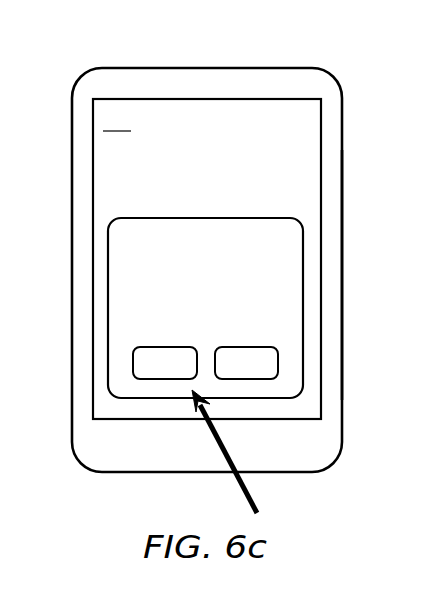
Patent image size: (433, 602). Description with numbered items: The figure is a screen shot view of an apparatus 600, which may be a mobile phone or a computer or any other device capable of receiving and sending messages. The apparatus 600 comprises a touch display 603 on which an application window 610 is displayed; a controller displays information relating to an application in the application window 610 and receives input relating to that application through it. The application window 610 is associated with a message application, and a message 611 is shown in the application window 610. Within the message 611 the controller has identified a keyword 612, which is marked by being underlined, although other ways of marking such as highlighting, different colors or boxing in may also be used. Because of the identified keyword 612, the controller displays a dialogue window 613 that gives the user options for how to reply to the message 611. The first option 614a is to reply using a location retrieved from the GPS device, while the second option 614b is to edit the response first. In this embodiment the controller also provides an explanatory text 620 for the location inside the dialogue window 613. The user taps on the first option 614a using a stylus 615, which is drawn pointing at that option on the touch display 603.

The apparatus 600 is at (275, 65).
The touch display 603 is at (343, 305).
The application window 610 is at (92, 245).
The message 611 is at (203, 106).
The keyword 612 is at (120, 106).
The dialogue window 613 is at (205, 218).
The first option 614a is at (133, 360).
The edit option 614b is at (250, 347).
The stylus 615 is at (253, 495).
The explanatory text 620 is at (228, 240).